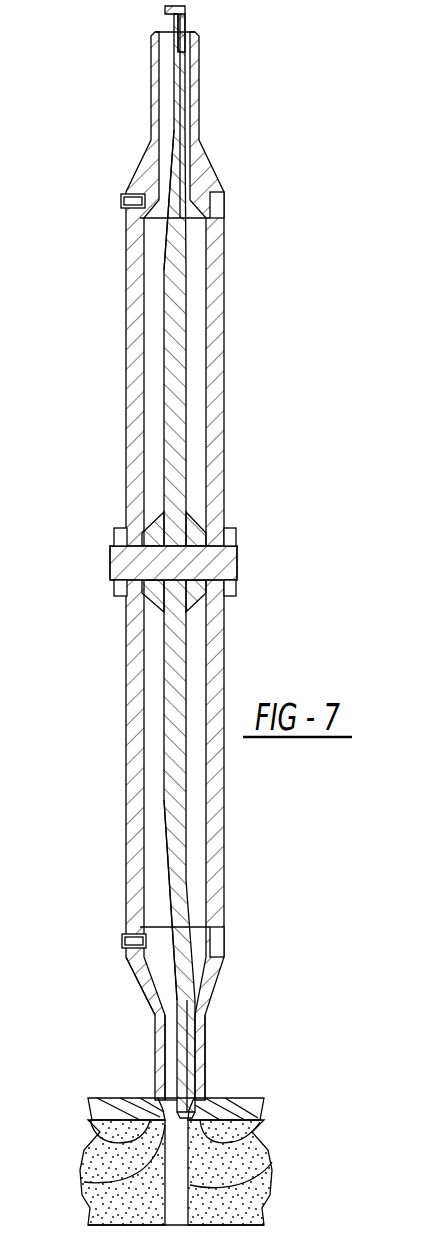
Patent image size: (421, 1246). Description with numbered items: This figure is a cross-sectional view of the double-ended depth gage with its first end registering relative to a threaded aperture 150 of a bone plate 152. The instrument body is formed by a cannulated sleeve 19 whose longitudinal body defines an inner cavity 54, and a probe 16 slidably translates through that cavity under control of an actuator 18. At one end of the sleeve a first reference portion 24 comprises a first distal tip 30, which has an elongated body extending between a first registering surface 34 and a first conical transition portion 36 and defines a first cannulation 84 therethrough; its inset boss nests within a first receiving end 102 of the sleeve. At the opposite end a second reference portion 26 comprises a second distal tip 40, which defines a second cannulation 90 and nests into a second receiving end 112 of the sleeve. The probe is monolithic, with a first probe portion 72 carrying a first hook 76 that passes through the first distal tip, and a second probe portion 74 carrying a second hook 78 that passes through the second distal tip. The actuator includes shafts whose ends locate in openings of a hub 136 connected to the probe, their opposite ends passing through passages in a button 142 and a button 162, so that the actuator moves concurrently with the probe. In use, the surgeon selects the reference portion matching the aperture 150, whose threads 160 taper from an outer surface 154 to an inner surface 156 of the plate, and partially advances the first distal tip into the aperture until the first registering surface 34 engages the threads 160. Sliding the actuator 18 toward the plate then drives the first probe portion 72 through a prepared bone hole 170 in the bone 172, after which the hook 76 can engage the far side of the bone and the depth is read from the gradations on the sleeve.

The probe 16 is at (176, 451).
The actuator 18 is at (163, 536).
The cannulated sleeve 19 is at (139, 497).
The first reference portion 24 is at (179, 1037).
The second reference portion 26 is at (165, 559).
The first distal tip 30 is at (197, 1020).
The first registering surface 34 is at (209, 1141).
The first conical transition portion 36 is at (200, 974).
The second distal tip 40 is at (201, 60).
The inner cavity 54 is at (150, 808).
The first probe portion 72 is at (196, 1070).
The second probe portion 74 is at (178, 46).
The first hook 76 is at (163, 1112).
The second hook 78 is at (167, 12).
The first cannulation 84 is at (175, 1018).
The second cannulation 90 is at (158, 118).
The first receiving end 102 is at (130, 935).
The second receiving end 112 is at (124, 206).
The hub 136 is at (157, 592).
The button 142 is at (120, 592).
The threaded aperture 150 is at (261, 1100).
The bone plate 152 is at (270, 1100).
The outer surface 154 is at (95, 1100).
The inner surface 156 is at (115, 1143).
The threads 160 is at (130, 1182).
The button 162 is at (234, 540).
The bone hole 170 is at (250, 1195).
The bone 172 is at (240, 1178).